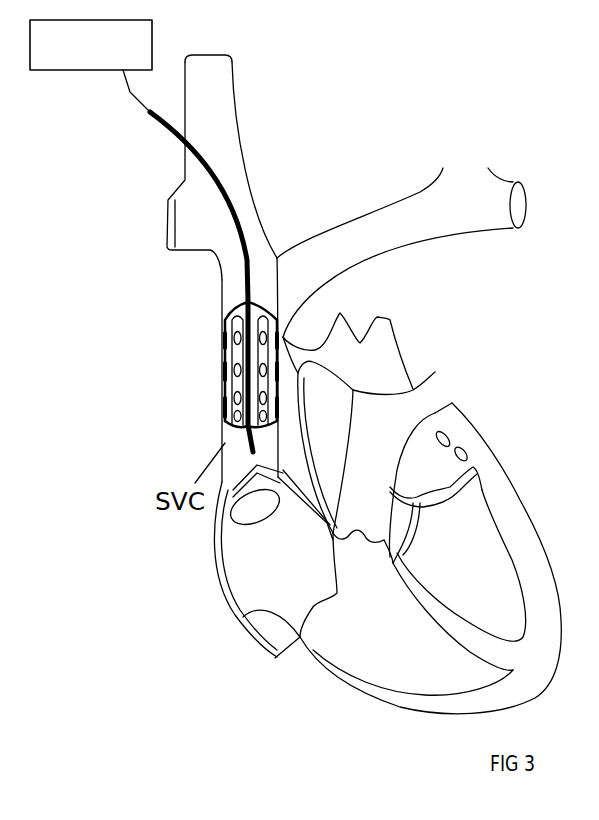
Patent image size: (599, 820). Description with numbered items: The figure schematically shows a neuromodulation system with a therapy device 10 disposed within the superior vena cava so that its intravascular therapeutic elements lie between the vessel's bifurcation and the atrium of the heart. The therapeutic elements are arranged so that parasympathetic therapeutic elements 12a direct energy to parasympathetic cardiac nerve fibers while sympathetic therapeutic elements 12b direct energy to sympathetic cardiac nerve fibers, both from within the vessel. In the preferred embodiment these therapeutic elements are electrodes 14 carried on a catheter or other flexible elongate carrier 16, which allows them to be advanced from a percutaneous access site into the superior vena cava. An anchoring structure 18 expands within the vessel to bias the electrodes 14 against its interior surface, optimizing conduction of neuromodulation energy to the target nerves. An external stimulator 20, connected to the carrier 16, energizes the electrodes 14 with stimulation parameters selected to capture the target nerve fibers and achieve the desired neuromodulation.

The therapy device 10 is at (189, 428).
The parasympathetic therapeutic elements 12a is at (222, 360).
The sympathetic therapeutic elements 12b is at (183, 360).
The electrodes 14 is at (216, 361).
The flexible elongate carrier 16 is at (222, 183).
The anchoring structure 18 is at (283, 337).
The external stimulator 20 is at (91, 66).